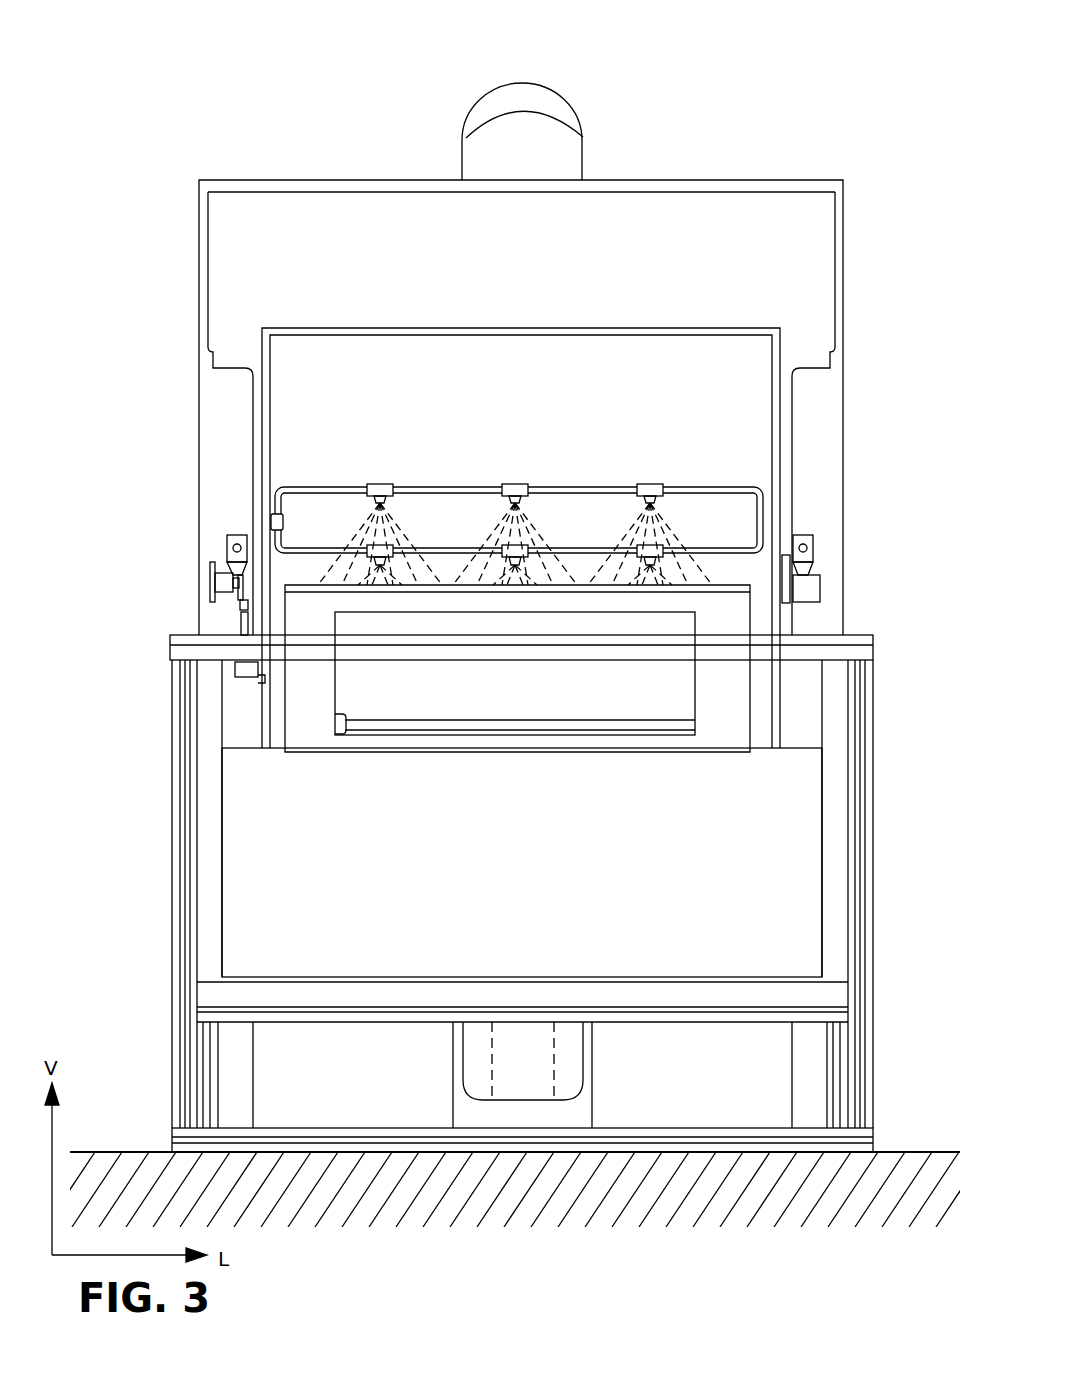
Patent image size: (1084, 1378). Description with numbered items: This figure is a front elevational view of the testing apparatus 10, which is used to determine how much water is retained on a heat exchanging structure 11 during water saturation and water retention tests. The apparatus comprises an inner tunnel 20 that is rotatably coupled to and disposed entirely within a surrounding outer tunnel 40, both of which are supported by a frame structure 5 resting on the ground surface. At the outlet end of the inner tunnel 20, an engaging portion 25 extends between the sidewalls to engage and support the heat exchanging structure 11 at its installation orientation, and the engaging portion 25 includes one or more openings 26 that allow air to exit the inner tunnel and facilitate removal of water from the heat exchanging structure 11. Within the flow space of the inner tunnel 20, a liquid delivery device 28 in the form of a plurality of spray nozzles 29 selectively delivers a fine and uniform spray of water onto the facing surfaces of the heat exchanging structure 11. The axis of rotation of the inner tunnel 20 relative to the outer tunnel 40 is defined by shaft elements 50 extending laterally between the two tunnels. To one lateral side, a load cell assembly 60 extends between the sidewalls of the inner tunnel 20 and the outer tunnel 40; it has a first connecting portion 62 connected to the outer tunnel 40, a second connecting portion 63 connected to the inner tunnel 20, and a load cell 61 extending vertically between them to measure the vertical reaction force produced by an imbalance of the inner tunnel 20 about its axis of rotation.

The testing apparatus 10 is at (168, 97).
The outer tunnel 40 is at (860, 334).
The inner tunnel 20 is at (768, 318).
The liquid delivery device 28 is at (705, 472).
The spray nozzles 29 is at (512, 487).
The engaging portion 25 is at (425, 742).
The heat exchanging structure 11 is at (603, 702).
The openings 26 is at (345, 733).
The load cell assembly 60 is at (176, 624).
The first connecting portion 62 is at (210, 565).
The load cell 61 is at (243, 625).
The second connecting portion 63 is at (245, 680).
The shaft elements 50 is at (795, 582).
The frame structure 5 is at (868, 870).